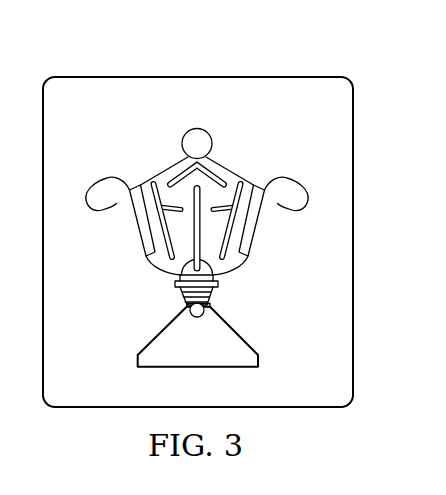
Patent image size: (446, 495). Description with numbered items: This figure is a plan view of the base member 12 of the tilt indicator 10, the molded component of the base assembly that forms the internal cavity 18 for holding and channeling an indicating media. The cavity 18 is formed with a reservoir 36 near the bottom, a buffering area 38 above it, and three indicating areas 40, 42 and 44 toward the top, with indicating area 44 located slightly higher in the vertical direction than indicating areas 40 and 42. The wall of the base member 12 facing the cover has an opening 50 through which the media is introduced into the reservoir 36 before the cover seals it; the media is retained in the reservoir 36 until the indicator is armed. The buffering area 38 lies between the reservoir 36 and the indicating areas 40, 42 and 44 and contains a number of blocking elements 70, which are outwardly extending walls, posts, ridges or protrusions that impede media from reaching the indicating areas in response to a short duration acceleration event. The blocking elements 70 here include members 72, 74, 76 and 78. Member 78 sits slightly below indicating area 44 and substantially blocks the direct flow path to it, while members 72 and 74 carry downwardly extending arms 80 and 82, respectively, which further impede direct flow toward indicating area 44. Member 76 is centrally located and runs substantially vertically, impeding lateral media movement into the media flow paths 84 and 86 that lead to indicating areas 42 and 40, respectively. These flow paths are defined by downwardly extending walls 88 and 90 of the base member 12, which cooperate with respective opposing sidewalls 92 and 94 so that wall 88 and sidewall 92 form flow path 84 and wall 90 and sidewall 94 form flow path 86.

The tilt indicator 10 is at (121, 47).
The base member 12 is at (371, 246).
The internal cavity 18 is at (114, 269).
The reservoir 36 is at (144, 348).
The buffering area 38 is at (265, 263).
The indicating area 40 is at (95, 182).
The indicating area 42 is at (298, 182).
The indicating area 44 is at (201, 129).
The opening 50 is at (202, 315).
The blocking elements 70 is at (226, 168).
The member 72 is at (256, 186).
The member 74 is at (140, 187).
The member 76 is at (184, 265).
The member 78 is at (179, 172).
The downwardly extending arm 80 is at (239, 182).
The downwardly extending arm 82 is at (150, 181).
The media flow path 84 is at (262, 233).
The media flow path 86 is at (133, 230).
The downwardly extending wall 88 is at (238, 259).
The downwardly extending wall 90 is at (146, 257).
The sidewall 92 is at (278, 206).
The sidewall 94 is at (117, 204).